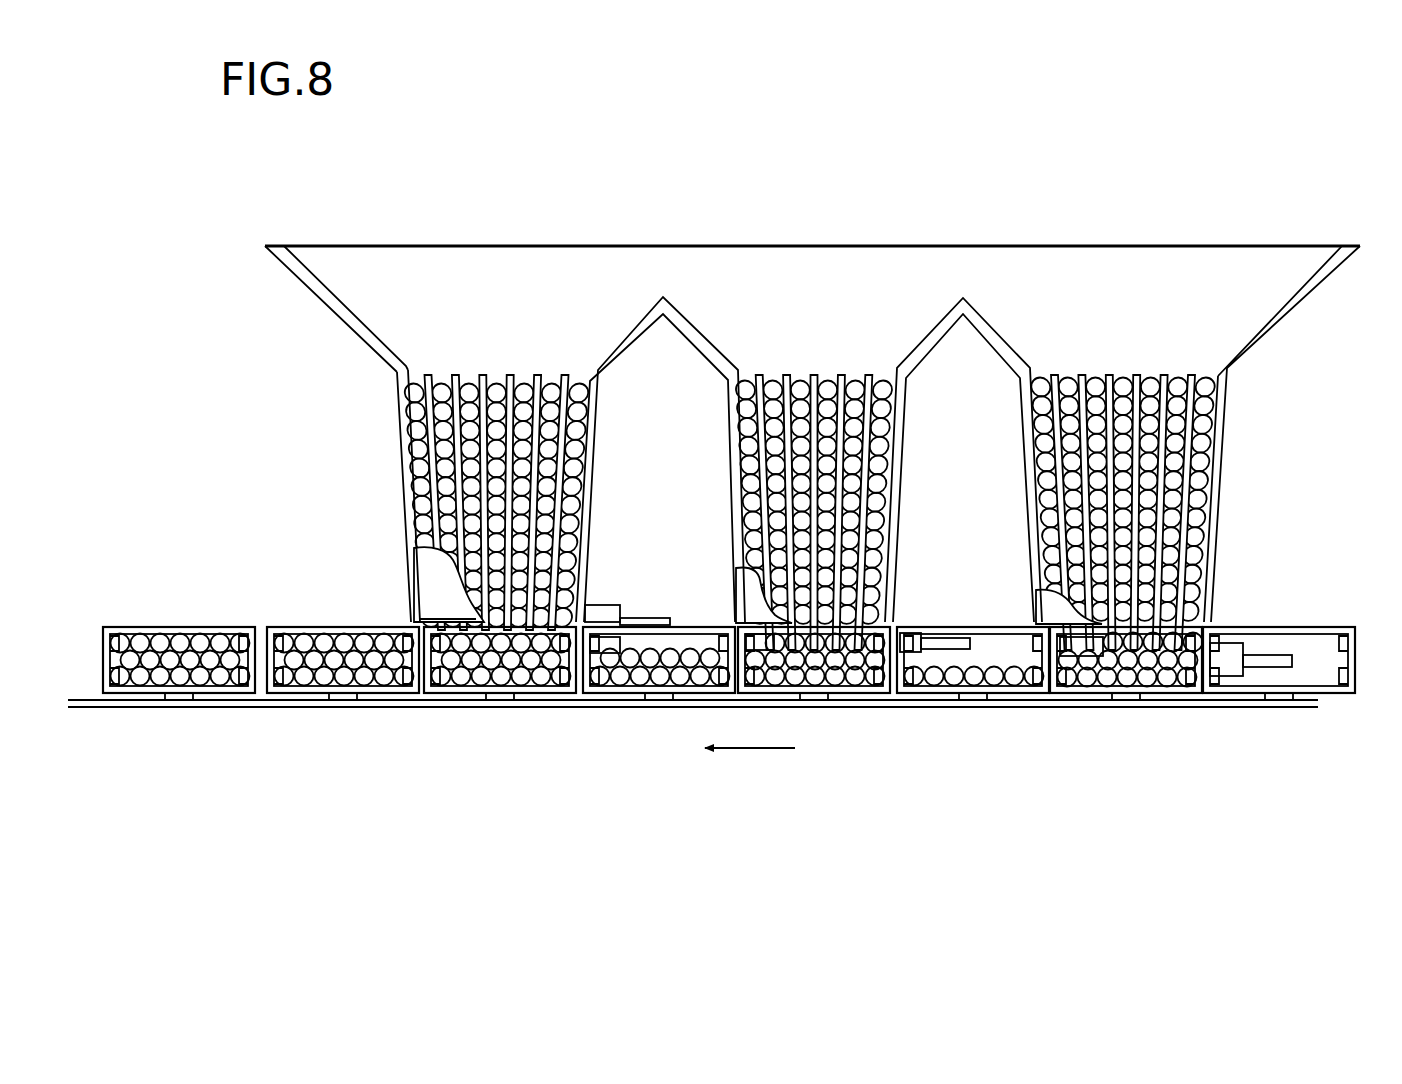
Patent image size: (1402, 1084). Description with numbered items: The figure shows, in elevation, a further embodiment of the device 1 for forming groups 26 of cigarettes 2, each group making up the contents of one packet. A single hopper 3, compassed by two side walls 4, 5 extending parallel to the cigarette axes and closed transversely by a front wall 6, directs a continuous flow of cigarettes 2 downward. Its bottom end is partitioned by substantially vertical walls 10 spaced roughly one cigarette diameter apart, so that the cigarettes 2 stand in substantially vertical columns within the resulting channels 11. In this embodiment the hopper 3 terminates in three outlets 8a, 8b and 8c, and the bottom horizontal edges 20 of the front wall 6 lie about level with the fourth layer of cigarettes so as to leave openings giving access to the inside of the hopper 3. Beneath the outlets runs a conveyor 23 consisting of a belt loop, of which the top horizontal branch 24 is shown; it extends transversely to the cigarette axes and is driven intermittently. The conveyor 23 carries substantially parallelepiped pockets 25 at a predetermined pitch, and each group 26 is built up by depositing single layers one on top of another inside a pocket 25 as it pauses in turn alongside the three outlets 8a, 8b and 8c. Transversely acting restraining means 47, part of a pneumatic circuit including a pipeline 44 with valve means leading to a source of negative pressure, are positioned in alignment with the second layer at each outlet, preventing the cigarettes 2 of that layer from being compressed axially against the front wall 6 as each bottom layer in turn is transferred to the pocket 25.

The device 1 is at (348, 584).
The cigarettes 2 is at (580, 410).
The hopper 3 is at (304, 294).
The side wall 4 is at (400, 428).
The side wall 5 is at (597, 470).
The front wall 6 is at (420, 566).
The outlet 8a is at (387, 622).
The outlet 8b is at (907, 618).
The outlet 8c is at (1228, 614).
The vertical walls 10 is at (537, 378).
The channels 11 is at (438, 383).
The bottom horizontal edges 20 is at (575, 582).
The conveyor 23 is at (1327, 712).
The top horizontal branch 24 is at (1232, 702).
The pockets 25 is at (290, 624).
The group of cigarettes 26 is at (170, 626).
The pipeline 44 is at (629, 614).
The restraining means 47 is at (645, 625).